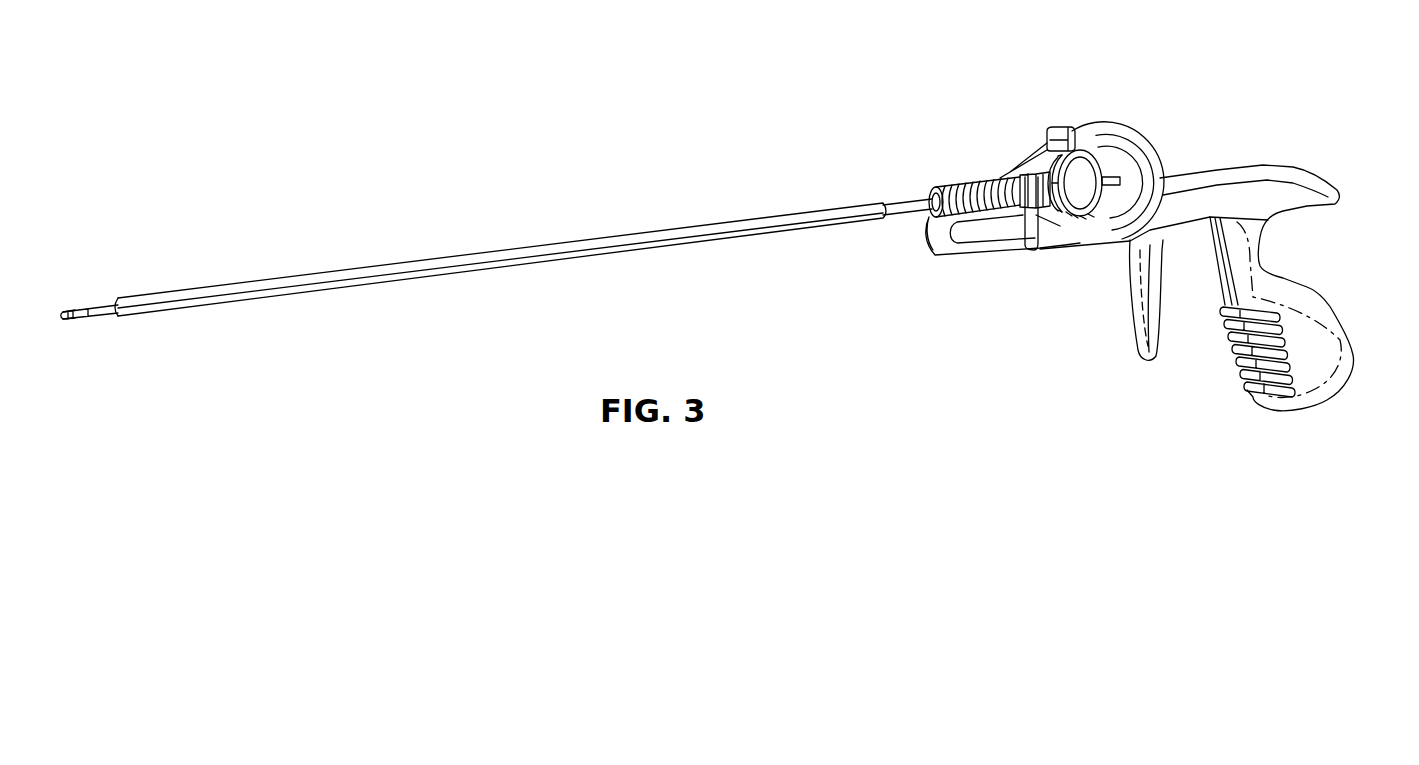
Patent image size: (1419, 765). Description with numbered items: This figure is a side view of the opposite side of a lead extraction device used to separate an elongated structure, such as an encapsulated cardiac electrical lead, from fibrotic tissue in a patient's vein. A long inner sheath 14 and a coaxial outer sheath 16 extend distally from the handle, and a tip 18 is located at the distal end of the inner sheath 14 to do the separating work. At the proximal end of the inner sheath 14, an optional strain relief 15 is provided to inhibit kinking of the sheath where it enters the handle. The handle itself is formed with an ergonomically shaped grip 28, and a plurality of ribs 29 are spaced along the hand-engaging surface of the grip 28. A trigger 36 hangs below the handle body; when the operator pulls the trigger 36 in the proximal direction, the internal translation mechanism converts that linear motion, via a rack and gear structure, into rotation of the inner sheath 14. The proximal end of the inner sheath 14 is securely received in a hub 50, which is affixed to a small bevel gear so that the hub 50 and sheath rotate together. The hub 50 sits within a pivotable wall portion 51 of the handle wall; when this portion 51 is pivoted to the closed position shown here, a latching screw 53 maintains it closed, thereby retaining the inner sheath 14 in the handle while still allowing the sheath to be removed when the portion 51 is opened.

The inner sheath 14 is at (106, 303).
The strain relief 15 is at (962, 184).
The outer sheath 16 is at (313, 275).
The tip 18 is at (73, 323).
The grip 28 is at (1355, 341).
The ribs 29 is at (1235, 360).
The trigger 36 is at (1138, 275).
The hub 50 is at (1064, 194).
The pivotable wall portion 51 is at (1100, 152).
The screw 53 is at (1080, 145).